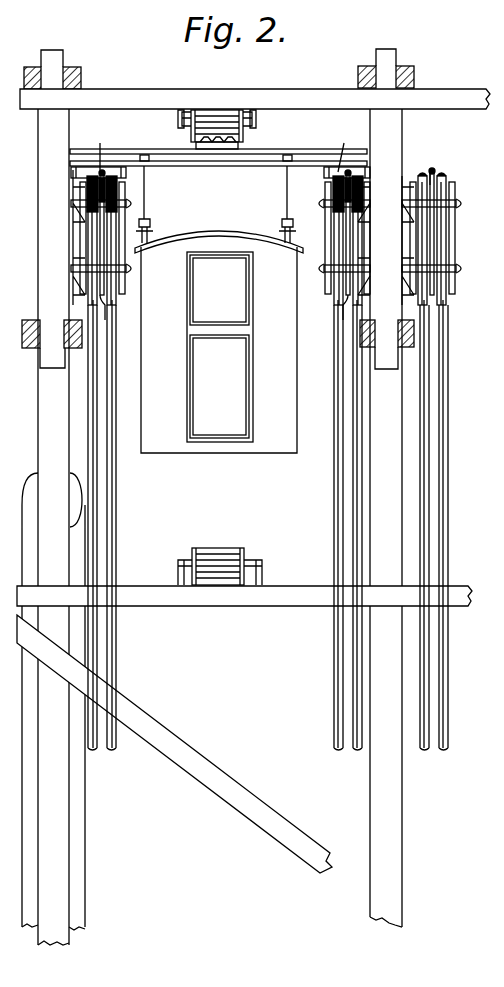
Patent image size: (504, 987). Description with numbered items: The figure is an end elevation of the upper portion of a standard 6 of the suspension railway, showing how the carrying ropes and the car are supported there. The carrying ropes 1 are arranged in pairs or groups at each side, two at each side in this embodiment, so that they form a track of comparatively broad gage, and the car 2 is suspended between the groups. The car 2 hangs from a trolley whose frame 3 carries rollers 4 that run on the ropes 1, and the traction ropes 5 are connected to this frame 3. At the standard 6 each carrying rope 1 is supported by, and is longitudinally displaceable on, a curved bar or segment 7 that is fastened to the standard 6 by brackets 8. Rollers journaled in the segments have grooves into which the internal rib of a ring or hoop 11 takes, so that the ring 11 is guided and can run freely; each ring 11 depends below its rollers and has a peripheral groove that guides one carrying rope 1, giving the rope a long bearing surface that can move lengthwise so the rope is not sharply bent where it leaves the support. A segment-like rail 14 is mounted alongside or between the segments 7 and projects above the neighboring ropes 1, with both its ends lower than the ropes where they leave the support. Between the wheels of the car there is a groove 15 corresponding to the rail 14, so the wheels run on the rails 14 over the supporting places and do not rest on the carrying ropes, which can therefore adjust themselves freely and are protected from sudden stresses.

The carrying ropes 1 is at (88, 206).
The car 2 is at (214, 455).
The frame 3 is at (219, 163).
The rollers 4 is at (112, 173).
The traction ropes 5 is at (192, 140).
The standard 6 is at (40, 401).
The curved bar or segment 7 is at (125, 289).
The brackets 8 is at (132, 207).
The ring or hoop 11 is at (112, 506).
The segment-like rail 14 is at (100, 296).
The groove 15 is at (222, 147).